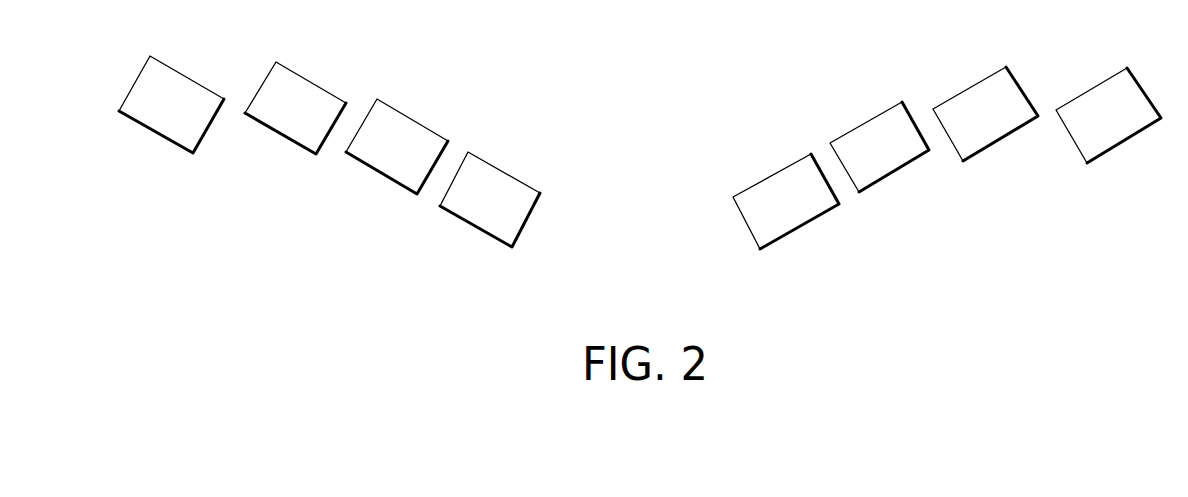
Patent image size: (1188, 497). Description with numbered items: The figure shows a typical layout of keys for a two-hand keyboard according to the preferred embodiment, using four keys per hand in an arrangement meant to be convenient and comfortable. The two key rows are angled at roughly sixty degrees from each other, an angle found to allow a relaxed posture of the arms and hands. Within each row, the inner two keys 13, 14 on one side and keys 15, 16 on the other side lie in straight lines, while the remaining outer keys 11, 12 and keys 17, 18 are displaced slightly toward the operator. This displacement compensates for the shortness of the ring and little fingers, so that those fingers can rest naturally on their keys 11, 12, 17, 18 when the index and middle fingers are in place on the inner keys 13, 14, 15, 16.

The key 11 is at (156, 113).
The key 12 is at (307, 95).
The key 13 is at (390, 158).
The key 14 is at (497, 182).
The key 15 is at (782, 183).
The key 16 is at (877, 173).
The key 17 is at (983, 95).
The key 18 is at (1099, 145).